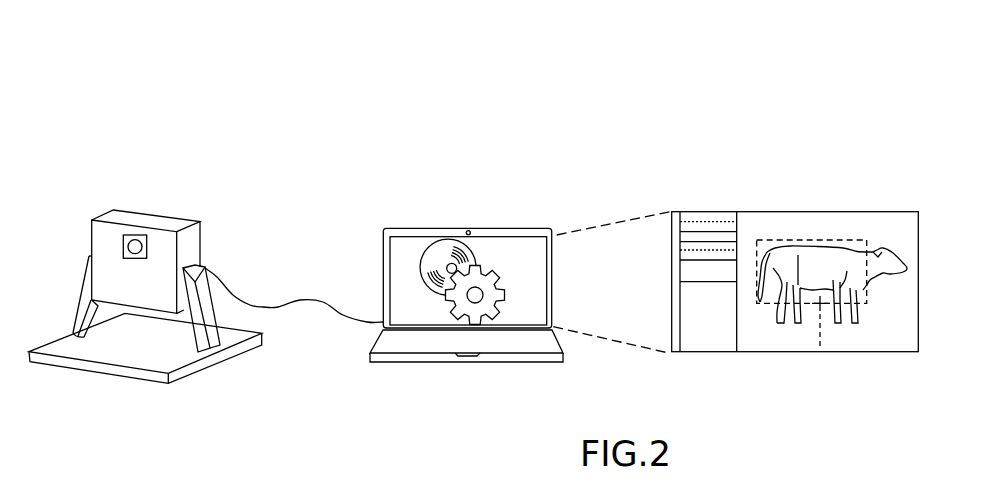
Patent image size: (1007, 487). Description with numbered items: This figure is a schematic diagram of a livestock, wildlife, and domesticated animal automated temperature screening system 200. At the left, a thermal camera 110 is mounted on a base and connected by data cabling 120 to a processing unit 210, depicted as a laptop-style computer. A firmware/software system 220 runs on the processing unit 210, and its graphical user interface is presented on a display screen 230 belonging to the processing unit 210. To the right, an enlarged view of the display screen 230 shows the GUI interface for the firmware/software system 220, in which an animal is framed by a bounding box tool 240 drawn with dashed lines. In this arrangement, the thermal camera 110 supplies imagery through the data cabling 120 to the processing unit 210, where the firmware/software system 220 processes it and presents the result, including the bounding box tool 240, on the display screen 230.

The livestock, wildlife, and domesticated animal automated temperature screening sys 200 is at (167, 108).
The thermal camera 110 is at (123, 213).
The data cabling 120 is at (288, 300).
The processing unit 210 is at (433, 345).
The display screen 230 is at (400, 243).
The firmware/software system 220 is at (477, 268).
The bounding box tool 240 is at (822, 352).